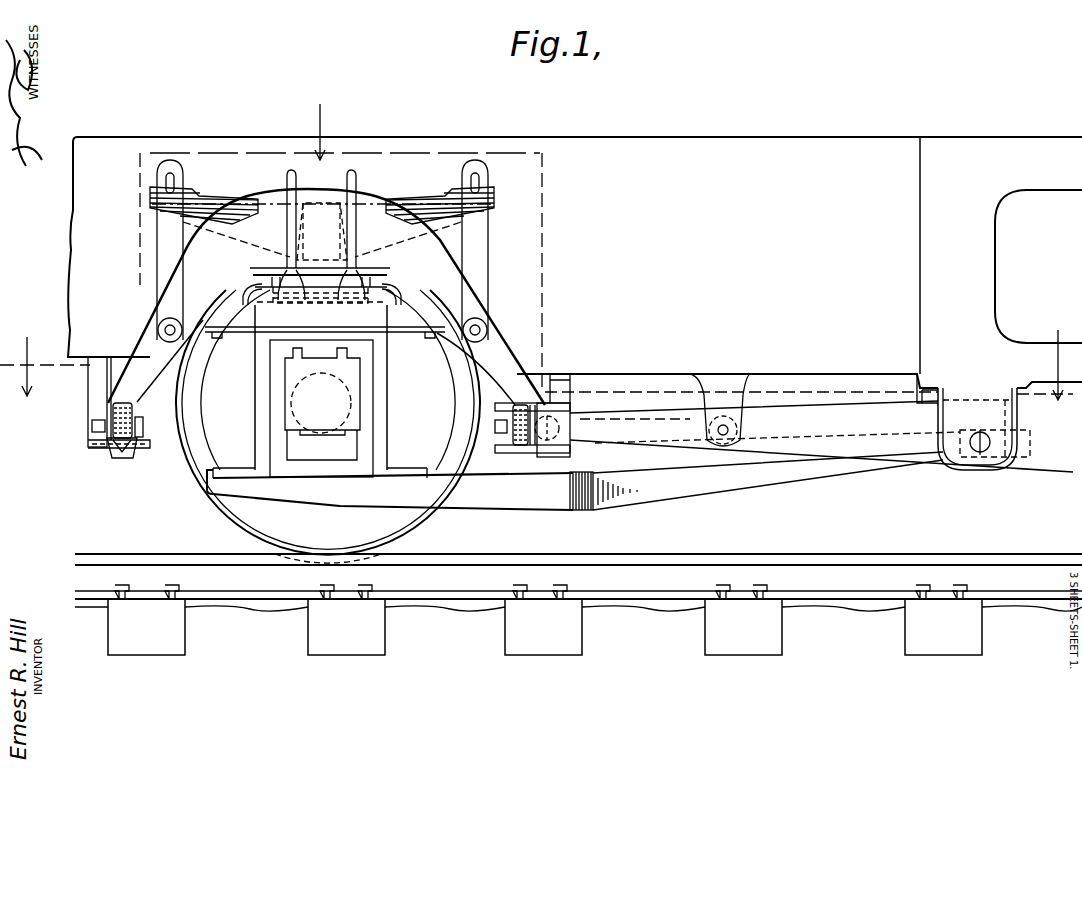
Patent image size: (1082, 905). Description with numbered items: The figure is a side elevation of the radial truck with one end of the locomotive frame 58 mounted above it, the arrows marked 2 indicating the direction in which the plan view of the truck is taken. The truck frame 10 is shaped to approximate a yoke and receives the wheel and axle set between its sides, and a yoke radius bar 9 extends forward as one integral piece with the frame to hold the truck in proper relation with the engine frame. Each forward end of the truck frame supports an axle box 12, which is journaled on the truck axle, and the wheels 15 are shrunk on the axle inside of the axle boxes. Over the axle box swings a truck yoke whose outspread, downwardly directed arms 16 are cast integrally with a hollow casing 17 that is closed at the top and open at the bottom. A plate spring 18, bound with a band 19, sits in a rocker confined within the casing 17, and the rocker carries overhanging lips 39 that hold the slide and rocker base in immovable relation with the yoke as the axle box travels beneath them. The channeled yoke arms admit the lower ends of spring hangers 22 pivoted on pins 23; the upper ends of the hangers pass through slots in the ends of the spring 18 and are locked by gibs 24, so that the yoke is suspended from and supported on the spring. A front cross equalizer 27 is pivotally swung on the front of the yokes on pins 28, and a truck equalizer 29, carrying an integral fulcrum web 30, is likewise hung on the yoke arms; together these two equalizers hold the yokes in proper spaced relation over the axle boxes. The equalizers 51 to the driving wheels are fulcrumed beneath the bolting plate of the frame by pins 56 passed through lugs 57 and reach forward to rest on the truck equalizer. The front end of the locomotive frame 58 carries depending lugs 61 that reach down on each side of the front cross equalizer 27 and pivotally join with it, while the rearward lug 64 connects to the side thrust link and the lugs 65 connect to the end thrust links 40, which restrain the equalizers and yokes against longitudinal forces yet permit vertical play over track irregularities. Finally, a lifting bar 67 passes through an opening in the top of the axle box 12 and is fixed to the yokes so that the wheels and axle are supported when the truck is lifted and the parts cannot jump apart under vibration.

The section line of Fig. 2 is at (542, 238).
The yoke radius bar 9 is at (1030, 443).
The truck frame 10 is at (312, 498).
The axle box 12 is at (382, 373).
The wheels 15 is at (242, 525).
The yoke arms 16 is at (153, 373).
The yoke casing 17 is at (362, 196).
The plate spring 18 is at (419, 212).
The band 19 is at (305, 218).
The spring hanger 22 is at (162, 277).
The pin 23 is at (160, 328).
The gib 24 is at (176, 183).
The front cross equalizer 27 is at (120, 458).
The pins 28 is at (500, 432).
The truck equalizer 29 is at (535, 447).
The fulcrum web 30 is at (570, 410).
The overhanging lips 39 is at (243, 290).
The end thrust links 40 is at (673, 448).
The equalizers to the driving wheels 51 is at (785, 414).
The pins 56 is at (970, 452).
The lugs 57 is at (922, 390).
The locomotive frame 58 is at (736, 140).
The depending lugs 61 is at (90, 387).
The lug 64 is at (563, 392).
The lugs 65 is at (716, 383).
The lifting bar 67 is at (240, 333).